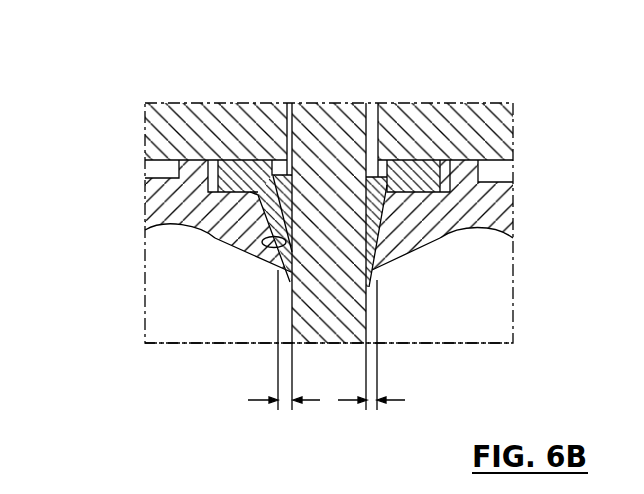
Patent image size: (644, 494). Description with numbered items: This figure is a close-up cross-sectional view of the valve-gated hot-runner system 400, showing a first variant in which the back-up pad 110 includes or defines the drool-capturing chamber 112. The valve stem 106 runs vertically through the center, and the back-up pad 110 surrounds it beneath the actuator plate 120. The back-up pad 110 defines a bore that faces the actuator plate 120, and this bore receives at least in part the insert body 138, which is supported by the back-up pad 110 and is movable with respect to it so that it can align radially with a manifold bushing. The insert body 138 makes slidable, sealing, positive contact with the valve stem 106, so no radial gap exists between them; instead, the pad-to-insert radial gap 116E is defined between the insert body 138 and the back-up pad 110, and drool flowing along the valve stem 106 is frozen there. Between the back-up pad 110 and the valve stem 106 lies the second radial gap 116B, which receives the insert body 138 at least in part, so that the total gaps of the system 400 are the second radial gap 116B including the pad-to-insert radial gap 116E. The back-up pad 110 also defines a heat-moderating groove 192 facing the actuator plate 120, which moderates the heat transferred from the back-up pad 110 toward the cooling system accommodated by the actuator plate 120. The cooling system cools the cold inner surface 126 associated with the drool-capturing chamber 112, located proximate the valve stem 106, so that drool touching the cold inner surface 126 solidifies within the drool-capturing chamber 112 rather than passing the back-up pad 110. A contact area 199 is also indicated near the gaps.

The valve-gated hot-runner system 400 is at (160, 65).
The insert body 138 is at (248, 172).
The actuator plate 120 is at (232, 144).
The valve stem 106 is at (354, 146).
The heat-moderating groove 192 is at (503, 172).
The back-up pad 110 is at (502, 217).
The cold inner surface 126 is at (217, 240).
The pad-to-insert radial gap 116E is at (266, 245).
The drool-capturing chamber 112 is at (478, 328).
The contact area 199 is at (293, 272).
The second radial gap 116B is at (283, 398).